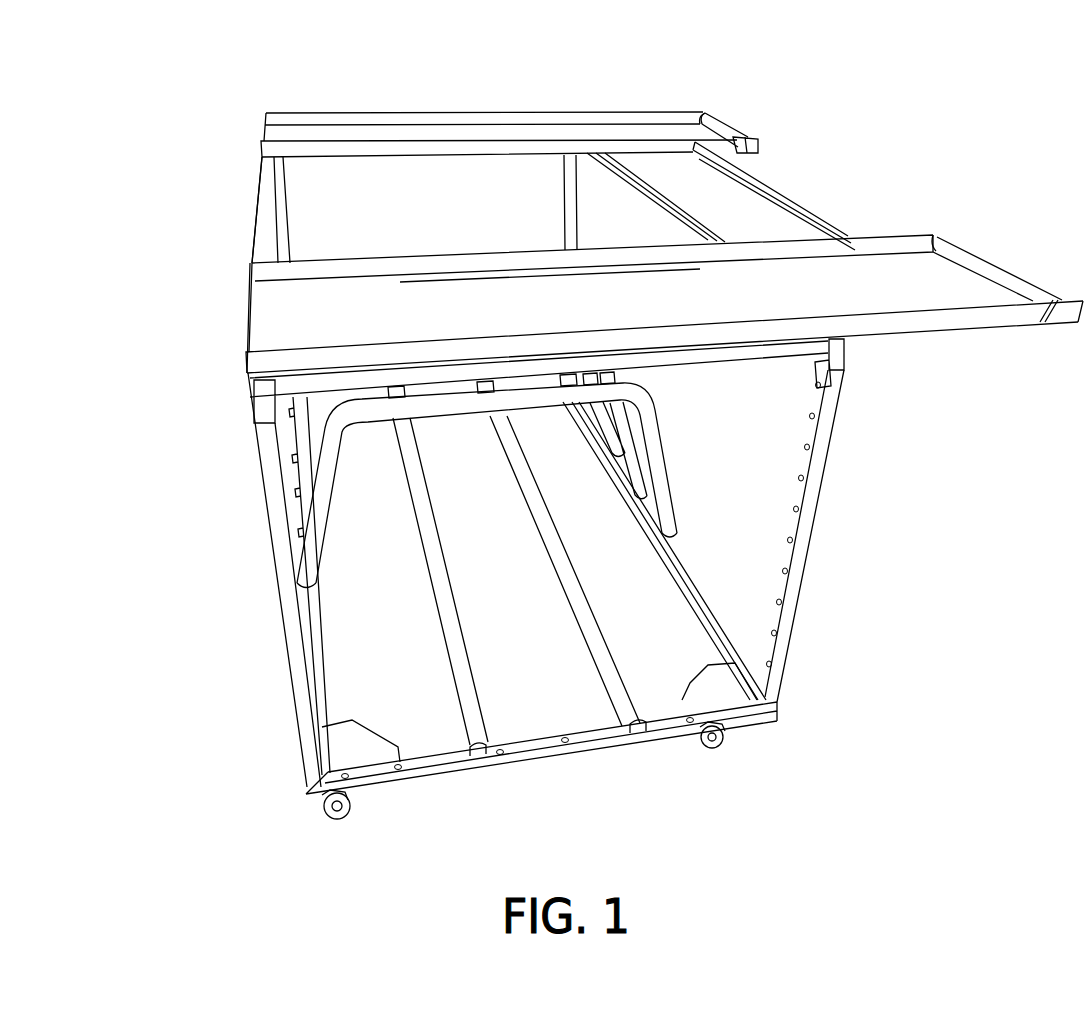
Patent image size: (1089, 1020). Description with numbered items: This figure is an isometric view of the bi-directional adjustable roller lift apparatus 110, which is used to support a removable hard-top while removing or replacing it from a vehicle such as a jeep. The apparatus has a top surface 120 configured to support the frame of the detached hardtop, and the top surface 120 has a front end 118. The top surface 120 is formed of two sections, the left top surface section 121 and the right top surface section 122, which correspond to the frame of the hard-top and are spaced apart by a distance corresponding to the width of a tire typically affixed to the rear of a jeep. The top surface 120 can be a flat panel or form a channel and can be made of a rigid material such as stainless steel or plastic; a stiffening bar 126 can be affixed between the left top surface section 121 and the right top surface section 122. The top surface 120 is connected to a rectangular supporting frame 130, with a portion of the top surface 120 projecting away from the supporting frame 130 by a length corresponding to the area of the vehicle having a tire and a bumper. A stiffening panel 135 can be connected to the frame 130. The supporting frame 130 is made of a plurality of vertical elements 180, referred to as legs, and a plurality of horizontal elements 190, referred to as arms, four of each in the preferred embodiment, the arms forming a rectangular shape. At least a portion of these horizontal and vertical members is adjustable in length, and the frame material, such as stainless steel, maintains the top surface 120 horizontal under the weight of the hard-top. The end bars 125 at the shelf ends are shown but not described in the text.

The bi-directional adjustable roller lift apparatus 110 is at (212, 536).
The front end 118 is at (690, 125).
The top surface 120 is at (283, 134).
The left top surface section 121 is at (578, 128).
The right top surface section 122 is at (577, 285).
The end bar 125 is at (742, 120).
The stiffening bar 126 is at (770, 188).
The supporting frame 130 is at (286, 387).
The stiffening panel 135 is at (337, 748).
The vertical elements 180 is at (813, 493).
The horizontal elements 190 is at (663, 360).